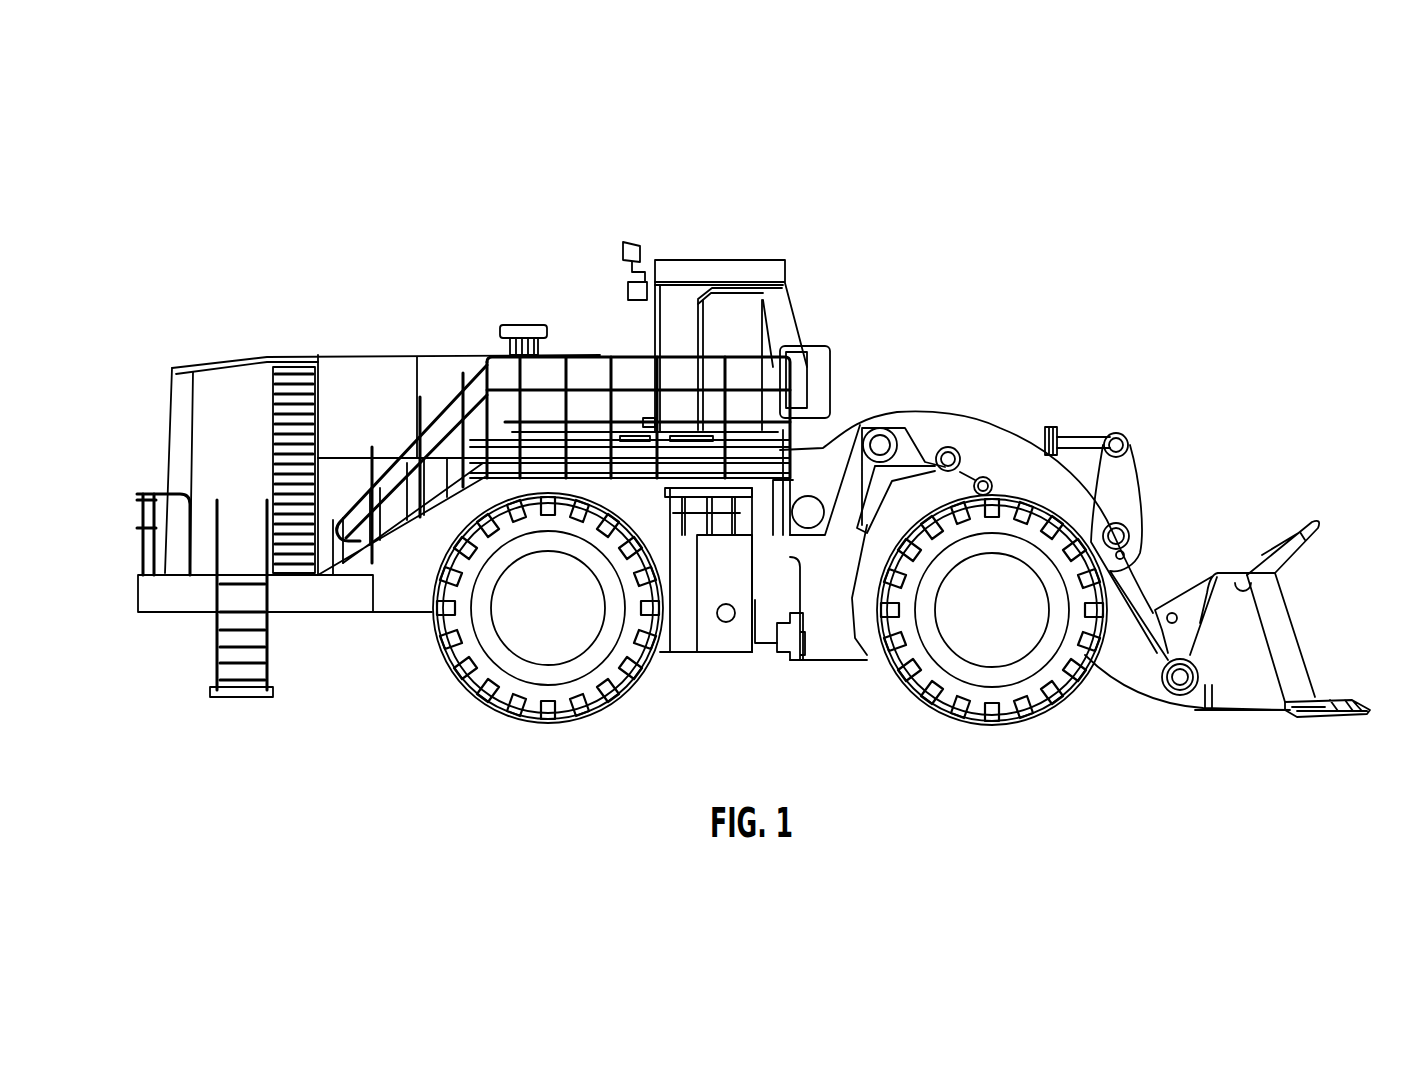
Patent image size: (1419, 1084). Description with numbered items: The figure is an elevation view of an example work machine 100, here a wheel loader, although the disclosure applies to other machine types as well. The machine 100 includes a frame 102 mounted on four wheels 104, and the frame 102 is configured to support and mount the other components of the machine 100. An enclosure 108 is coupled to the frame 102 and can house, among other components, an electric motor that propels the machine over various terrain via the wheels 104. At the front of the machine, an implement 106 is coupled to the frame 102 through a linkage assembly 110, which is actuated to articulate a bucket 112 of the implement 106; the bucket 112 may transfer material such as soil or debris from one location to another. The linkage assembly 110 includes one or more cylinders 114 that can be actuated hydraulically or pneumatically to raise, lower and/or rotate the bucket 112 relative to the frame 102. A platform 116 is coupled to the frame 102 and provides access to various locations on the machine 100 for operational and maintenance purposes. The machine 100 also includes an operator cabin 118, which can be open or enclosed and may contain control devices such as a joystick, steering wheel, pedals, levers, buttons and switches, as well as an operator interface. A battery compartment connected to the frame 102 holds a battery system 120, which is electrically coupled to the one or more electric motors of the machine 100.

The machine 100 is at (487, 193).
The frame 102 is at (176, 612).
The wheels 104 is at (507, 722).
The implement 106 is at (1172, 413).
The enclosure 108 is at (232, 358).
The linkage assembly 110 is at (1130, 498).
The bucket 112 is at (1270, 704).
The cylinders 114 is at (1030, 428).
The platform 116 is at (638, 433).
The operator cabin 118 is at (778, 270).
The battery system 120 is at (727, 638).